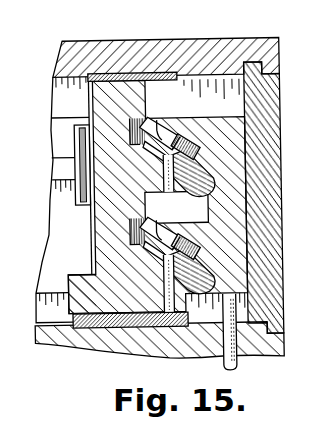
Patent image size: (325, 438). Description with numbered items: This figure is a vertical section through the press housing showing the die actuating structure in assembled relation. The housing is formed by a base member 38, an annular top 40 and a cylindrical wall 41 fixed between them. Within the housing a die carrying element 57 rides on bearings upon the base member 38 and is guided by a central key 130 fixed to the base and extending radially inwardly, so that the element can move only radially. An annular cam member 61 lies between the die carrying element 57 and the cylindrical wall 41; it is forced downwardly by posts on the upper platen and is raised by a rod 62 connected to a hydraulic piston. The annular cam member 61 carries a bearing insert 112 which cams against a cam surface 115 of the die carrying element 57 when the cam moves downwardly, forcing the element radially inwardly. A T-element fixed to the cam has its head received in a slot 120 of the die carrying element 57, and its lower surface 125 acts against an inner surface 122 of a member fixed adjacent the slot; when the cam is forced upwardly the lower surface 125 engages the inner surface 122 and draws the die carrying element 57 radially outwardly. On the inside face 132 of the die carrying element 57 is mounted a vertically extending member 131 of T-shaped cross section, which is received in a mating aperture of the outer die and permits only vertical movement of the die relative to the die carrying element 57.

The base member 38 is at (159, 353).
The annular top 40 is at (208, 46).
The cylindrical wall 41 is at (268, 178).
The die carrying element 57 is at (126, 288).
The annular cam member 61 is at (218, 210).
The rod 62 is at (237, 364).
The bearing insert 112 is at (175, 138).
The cam surface 115 is at (158, 120).
The slot 120 is at (145, 139).
The inner surface 122 is at (169, 147).
The lower surface 125 is at (201, 171).
The central key 130 is at (86, 324).
The vertically extending member 131 is at (78, 166).
The inside face 132 is at (90, 213).